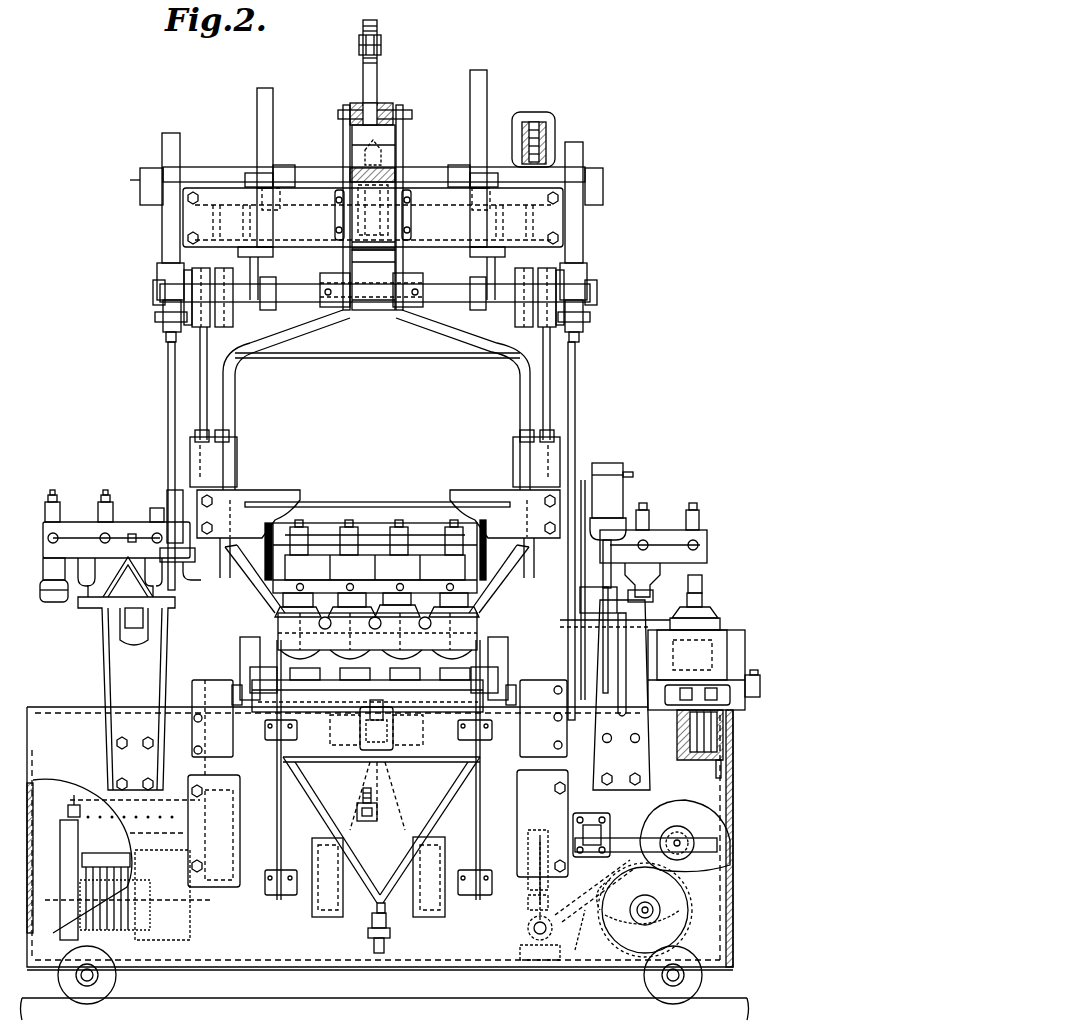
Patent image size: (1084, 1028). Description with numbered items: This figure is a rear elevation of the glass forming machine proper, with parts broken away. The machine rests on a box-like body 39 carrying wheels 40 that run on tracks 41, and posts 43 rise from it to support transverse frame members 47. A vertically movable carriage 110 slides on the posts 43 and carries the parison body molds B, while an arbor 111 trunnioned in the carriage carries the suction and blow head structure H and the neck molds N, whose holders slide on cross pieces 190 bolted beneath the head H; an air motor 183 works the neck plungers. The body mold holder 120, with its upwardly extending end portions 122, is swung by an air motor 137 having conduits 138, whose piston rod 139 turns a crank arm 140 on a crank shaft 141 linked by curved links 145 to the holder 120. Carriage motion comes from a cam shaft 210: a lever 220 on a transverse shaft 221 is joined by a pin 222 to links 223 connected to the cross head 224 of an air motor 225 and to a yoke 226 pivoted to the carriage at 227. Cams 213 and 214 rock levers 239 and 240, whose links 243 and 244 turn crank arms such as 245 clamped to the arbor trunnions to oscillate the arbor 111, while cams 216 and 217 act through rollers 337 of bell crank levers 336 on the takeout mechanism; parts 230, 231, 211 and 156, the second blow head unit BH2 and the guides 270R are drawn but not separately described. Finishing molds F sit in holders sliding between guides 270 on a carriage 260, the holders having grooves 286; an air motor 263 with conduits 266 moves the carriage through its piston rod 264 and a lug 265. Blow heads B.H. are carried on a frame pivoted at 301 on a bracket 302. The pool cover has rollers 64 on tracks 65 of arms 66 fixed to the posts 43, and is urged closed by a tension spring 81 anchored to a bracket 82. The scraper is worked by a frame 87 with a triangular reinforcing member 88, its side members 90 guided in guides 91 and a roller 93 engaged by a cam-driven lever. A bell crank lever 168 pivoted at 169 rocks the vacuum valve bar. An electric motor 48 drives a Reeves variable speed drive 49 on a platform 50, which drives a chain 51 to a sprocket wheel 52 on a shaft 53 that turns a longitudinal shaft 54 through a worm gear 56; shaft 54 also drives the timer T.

The adjusting screw rod 230 is at (378, 78).
The lock nut 231 is at (381, 42).
The cross head 224 is at (394, 108).
The links 223 is at (403, 212).
The air motor 225 is at (358, 218).
The pin 222 is at (396, 250).
The lever 220 is at (403, 290).
The transverse frame members 47 is at (310, 187).
The cam shaft 210 is at (140, 182).
The cam 213 is at (170, 140).
The cam 216 is at (265, 95).
The cam 217 is at (478, 70).
The cam 214 is at (583, 153).
The threaded cap 211 is at (545, 135).
The cam rollers 337 is at (270, 175).
The transverse shaft 221 is at (440, 296).
The bell crank levers 336 is at (374, 301).
The lever 239 is at (155, 318).
The lever 240 is at (590, 312).
The link 243 is at (168, 370).
The link 244 is at (575, 366).
The posts 43 is at (200, 402).
The yoke 226 is at (300, 328).
The pivotal connection 227 is at (237, 470).
The ram or carriage 110 is at (205, 500).
The upwardly extending end portions 122 is at (250, 510).
The arbor 111 is at (398, 502).
The parison body molds B is at (312, 552).
The suction and blow head structure H is at (330, 563).
The air motor 183 is at (385, 550).
The neck molds N is at (400, 592).
The cross pieces 190 is at (377, 603).
The curved links 145 is at (470, 620).
The parison body mold holder 120 is at (278, 622).
The guides 270 is at (280, 658).
The rollers 64 is at (240, 668).
The tracks 65 is at (232, 690).
The crank arm 245 is at (167, 510).
The blow heads B.H. is at (40, 600).
The hanger plate 156 is at (148, 640).
The horizontal arms 66 is at (192, 742).
The air motor 137 is at (623, 490).
The conduits 138 is at (633, 474).
The piston rod 139 is at (612, 540).
The burner head right BH2 is at (700, 590).
The pivot 301 is at (702, 582).
The bracket 302 is at (702, 600).
The finishing molds F is at (651, 616).
The grooves 286 is at (740, 628).
The plate 270R is at (745, 655).
The carriage 260 is at (742, 712).
The air motor 263 is at (710, 727).
The conduits 266 is at (722, 766).
The piston rod 264 is at (636, 690).
The crank arm 140 is at (614, 640).
The crank shaft 141 is at (621, 664).
The tracks 41 is at (278, 998).
The body 39 is at (482, 998).
The wheels 40 is at (92, 995).
The timer T is at (68, 808).
The triangular reinforcing member 88 is at (312, 790).
The side members 90 is at (381, 835).
The frame member 87 is at (400, 762).
The bracket 82 is at (363, 792).
The tension spring 81 is at (357, 807).
The roller 93 is at (378, 953).
The guides 91 is at (293, 740).
The lug 265 is at (360, 720).
The shaft 54 is at (490, 905).
The worm gear 56 is at (540, 835).
The bell crank lever 168 is at (590, 813).
The pivot 169 is at (628, 815).
The Reeves variable speed drive 49 is at (700, 835).
The electric motor 48 is at (672, 910).
The platform 50 is at (690, 900).
The sprocket wheel 52 is at (545, 940).
The shaft 53 is at (530, 960).
The chain 51 is at (585, 945).